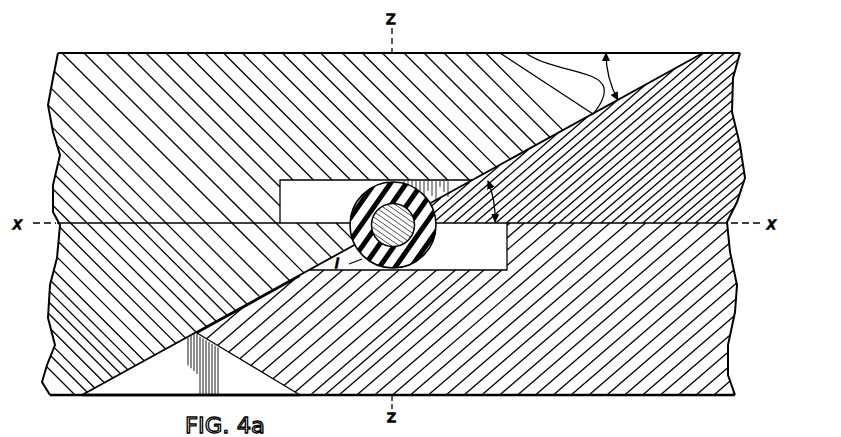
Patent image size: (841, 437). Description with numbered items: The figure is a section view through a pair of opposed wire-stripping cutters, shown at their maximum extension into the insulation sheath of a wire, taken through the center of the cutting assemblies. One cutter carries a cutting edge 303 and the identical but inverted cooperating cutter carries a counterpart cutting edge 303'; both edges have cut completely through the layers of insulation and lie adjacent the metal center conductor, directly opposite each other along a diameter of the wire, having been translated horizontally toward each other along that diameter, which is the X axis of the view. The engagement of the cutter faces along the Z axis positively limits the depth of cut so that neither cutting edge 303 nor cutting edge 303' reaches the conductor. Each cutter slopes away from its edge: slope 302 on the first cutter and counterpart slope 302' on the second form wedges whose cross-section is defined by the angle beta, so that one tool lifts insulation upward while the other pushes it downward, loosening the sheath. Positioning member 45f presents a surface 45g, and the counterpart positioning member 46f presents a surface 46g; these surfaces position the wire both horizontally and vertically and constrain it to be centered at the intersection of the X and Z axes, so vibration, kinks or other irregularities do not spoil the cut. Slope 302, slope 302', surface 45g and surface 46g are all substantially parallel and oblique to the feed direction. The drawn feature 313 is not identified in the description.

The positioning member 46f is at (170, 137).
The positioning member 45f is at (585, 333).
The surface 46g is at (588, 108).
The surface 45g is at (281, 285).
The slope 302 is at (392, 212).
The counterpart slope 302' is at (191, 377).
The cutting edge 303 is at (403, 251).
The cutting edge 303' is at (393, 224).
The lip 313 is at (189, 352).